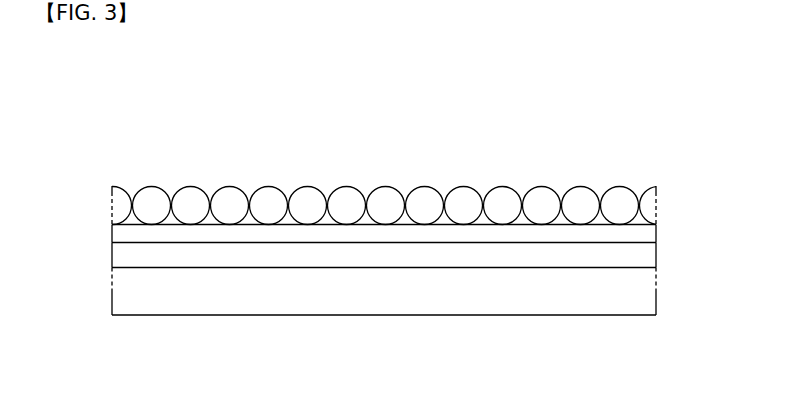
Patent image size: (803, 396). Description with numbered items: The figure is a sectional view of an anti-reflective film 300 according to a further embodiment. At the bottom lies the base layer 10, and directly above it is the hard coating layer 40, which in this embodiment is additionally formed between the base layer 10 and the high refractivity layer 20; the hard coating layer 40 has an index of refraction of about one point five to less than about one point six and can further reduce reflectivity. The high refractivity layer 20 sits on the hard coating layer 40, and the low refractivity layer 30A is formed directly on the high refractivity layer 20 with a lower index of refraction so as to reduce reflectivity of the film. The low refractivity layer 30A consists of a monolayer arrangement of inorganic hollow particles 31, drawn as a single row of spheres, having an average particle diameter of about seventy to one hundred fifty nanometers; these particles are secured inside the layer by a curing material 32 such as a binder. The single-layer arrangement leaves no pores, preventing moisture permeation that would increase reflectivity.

The anti-reflective film 300 is at (629, 130).
The low refractivity layer 30A is at (663, 190).
The inorganic hollow particles 31 is at (153, 197).
The curing material 32 is at (598, 222).
The high refractivity layer 20 is at (650, 232).
The hard coating layer 40 is at (650, 258).
The base layer 10 is at (650, 288).